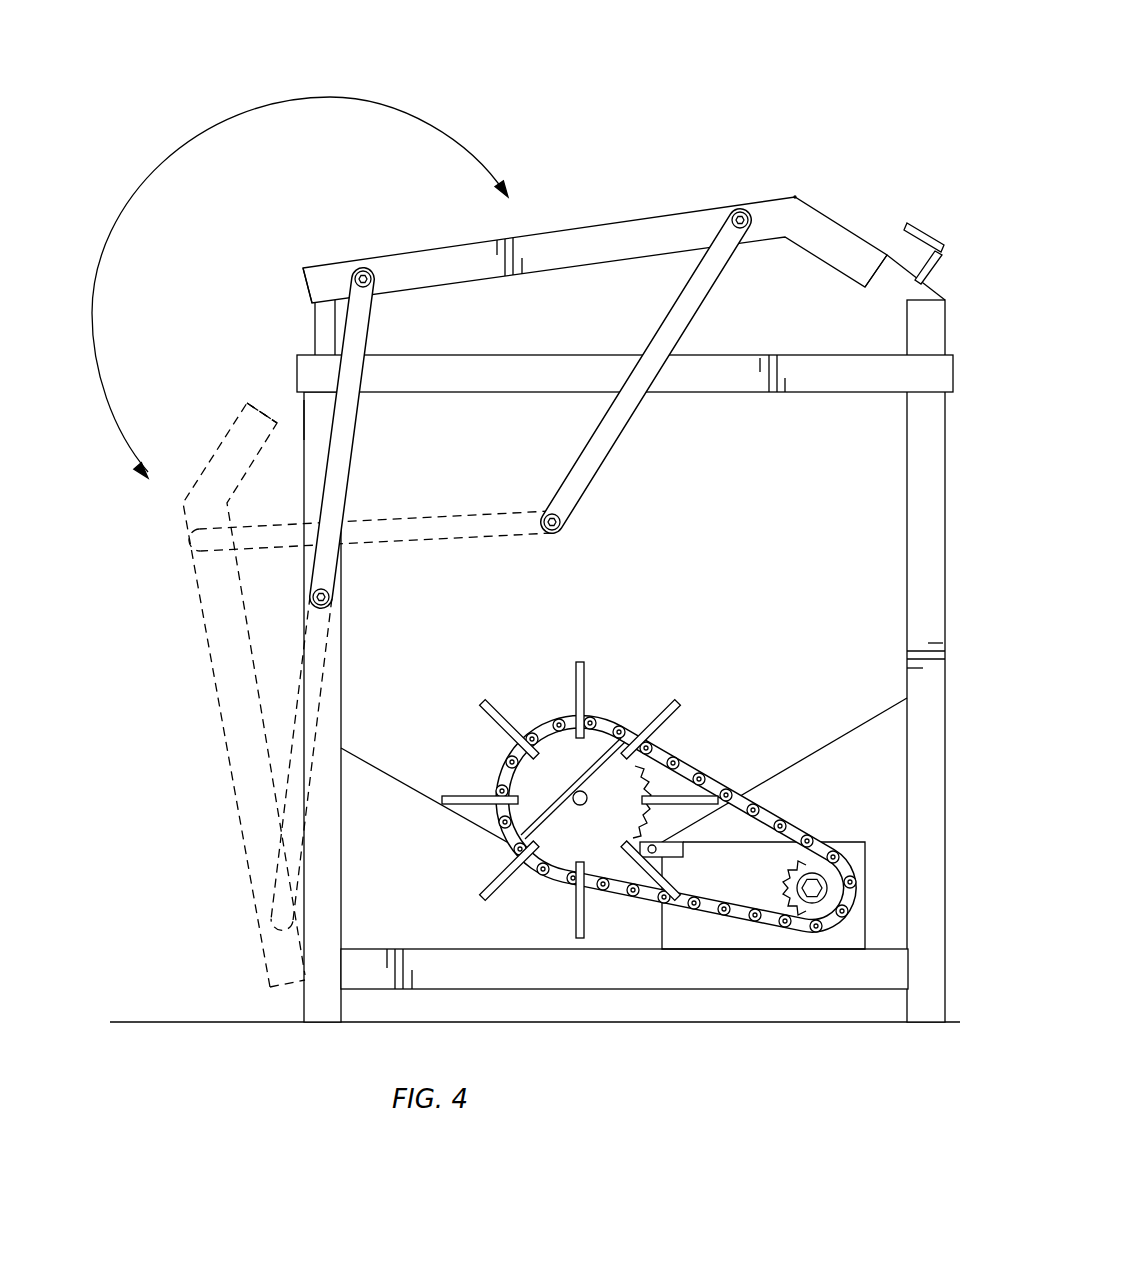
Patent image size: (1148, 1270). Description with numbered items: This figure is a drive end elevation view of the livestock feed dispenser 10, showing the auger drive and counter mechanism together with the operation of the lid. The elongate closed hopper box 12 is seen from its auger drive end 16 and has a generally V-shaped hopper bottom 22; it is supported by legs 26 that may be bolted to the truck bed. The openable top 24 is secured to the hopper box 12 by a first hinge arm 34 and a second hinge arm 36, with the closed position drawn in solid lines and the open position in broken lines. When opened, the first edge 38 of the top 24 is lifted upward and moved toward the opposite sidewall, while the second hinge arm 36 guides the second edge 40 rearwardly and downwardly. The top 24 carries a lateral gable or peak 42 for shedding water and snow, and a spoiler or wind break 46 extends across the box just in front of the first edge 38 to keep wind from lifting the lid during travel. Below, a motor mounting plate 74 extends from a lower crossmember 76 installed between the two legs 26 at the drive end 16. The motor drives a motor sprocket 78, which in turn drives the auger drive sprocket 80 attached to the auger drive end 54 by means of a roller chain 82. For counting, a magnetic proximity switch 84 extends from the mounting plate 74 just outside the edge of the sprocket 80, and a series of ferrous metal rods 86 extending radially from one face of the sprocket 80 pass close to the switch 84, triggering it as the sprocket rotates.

The livestock feed dispenser 10 is at (692, 100).
The hopper box 12 is at (303, 423).
The auger drive end 16 is at (726, 578).
The hopper bottom 22 is at (382, 773).
The top 24 is at (620, 216).
The legs 26 is at (343, 893).
The first hinge arm 34 is at (603, 423).
The second hinge arm 36 is at (332, 563).
The first edge of the top 38 is at (878, 272).
The second edge of the top 40 is at (303, 270).
The gable or peak 42 is at (795, 197).
The spoiler or wind break 46 is at (927, 222).
The auger drive end 54 is at (577, 787).
The motor mounting plate 74 is at (732, 935).
The lower crossmember 76 is at (630, 989).
The motor sprocket 78 is at (780, 890).
The auger drive sprocket 80 is at (612, 802).
The roller chain 82 is at (720, 777).
The magnetic proximity switch 84 is at (658, 846).
The ferrous metal rods 86 is at (585, 678).